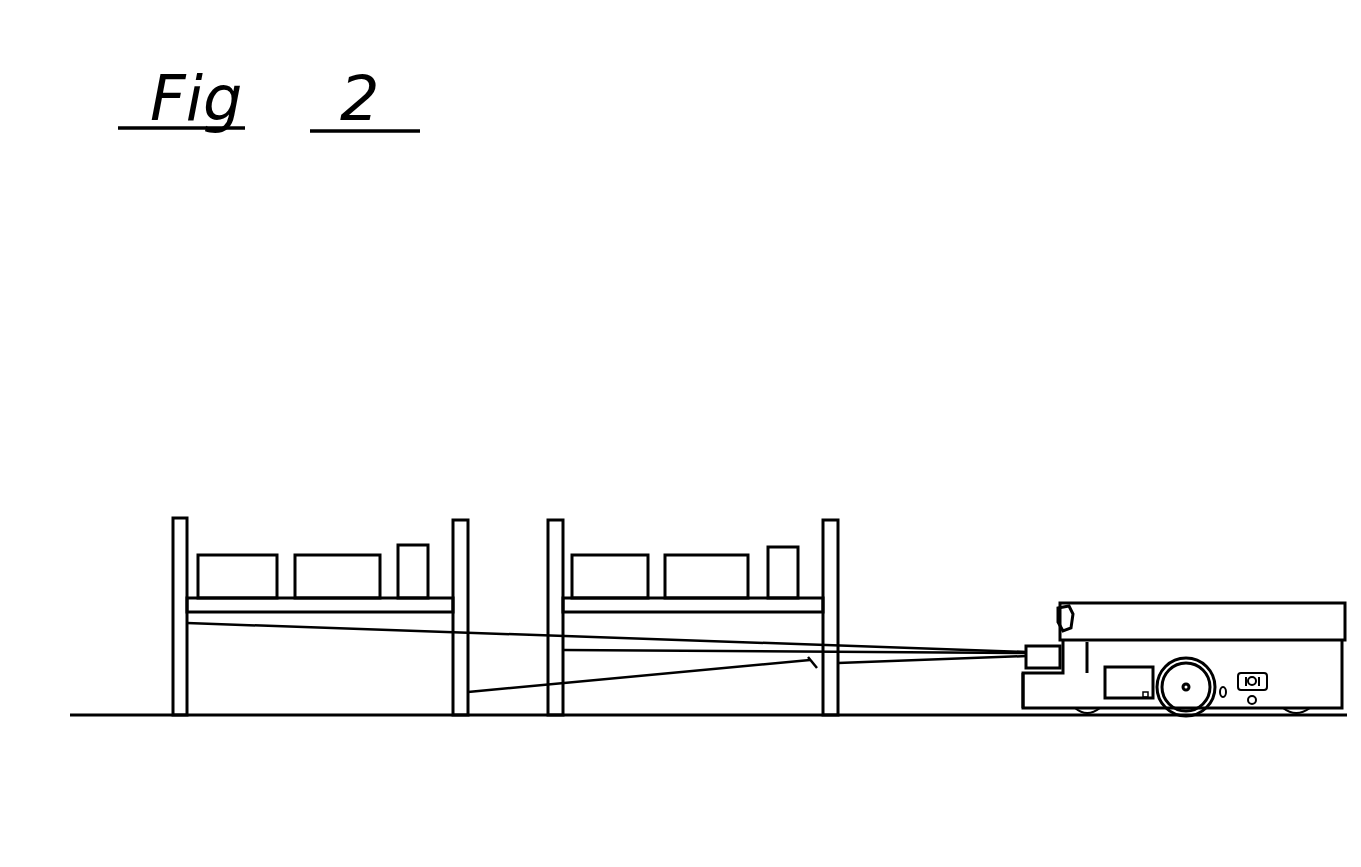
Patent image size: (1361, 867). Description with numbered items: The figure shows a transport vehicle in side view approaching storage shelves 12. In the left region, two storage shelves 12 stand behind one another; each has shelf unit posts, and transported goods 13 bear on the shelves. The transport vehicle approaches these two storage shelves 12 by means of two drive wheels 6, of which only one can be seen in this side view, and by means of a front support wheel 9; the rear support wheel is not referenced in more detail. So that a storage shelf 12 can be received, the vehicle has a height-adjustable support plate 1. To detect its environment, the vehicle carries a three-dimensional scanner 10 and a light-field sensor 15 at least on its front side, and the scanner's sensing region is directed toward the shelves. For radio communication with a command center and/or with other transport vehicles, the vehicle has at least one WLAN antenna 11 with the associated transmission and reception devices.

The height-adjustable support plate 1 is at (1090, 628).
The drive wheel 6 is at (1185, 716).
The front support wheel 9 is at (1085, 712).
The 3-D scanner 10 is at (1027, 647).
The WLAN antenna 11 is at (1060, 618).
The storage shelf 12 is at (187, 518).
The transported goods 13 is at (327, 558).
The light-field sensor 15 is at (1025, 677).